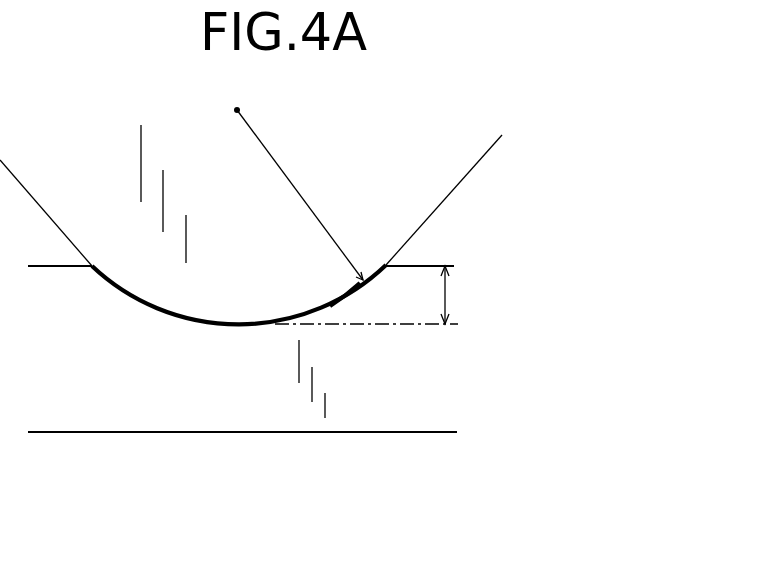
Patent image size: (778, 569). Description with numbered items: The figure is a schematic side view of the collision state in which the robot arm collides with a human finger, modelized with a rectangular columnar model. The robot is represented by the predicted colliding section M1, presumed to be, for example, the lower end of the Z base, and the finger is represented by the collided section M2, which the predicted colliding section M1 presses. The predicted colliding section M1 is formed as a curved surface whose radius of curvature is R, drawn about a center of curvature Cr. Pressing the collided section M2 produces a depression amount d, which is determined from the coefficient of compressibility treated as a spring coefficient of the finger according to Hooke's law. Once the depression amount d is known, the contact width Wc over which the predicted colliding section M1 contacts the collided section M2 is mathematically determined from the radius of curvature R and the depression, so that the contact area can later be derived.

The predicted colliding section M1 is at (472, 170).
The collided section M2 is at (214, 433).
The center of curvature Cr is at (226, 101).
The radius of curvature R is at (283, 170).
The depression amount d is at (495, 295).
The contact width Wc is at (348, 298).